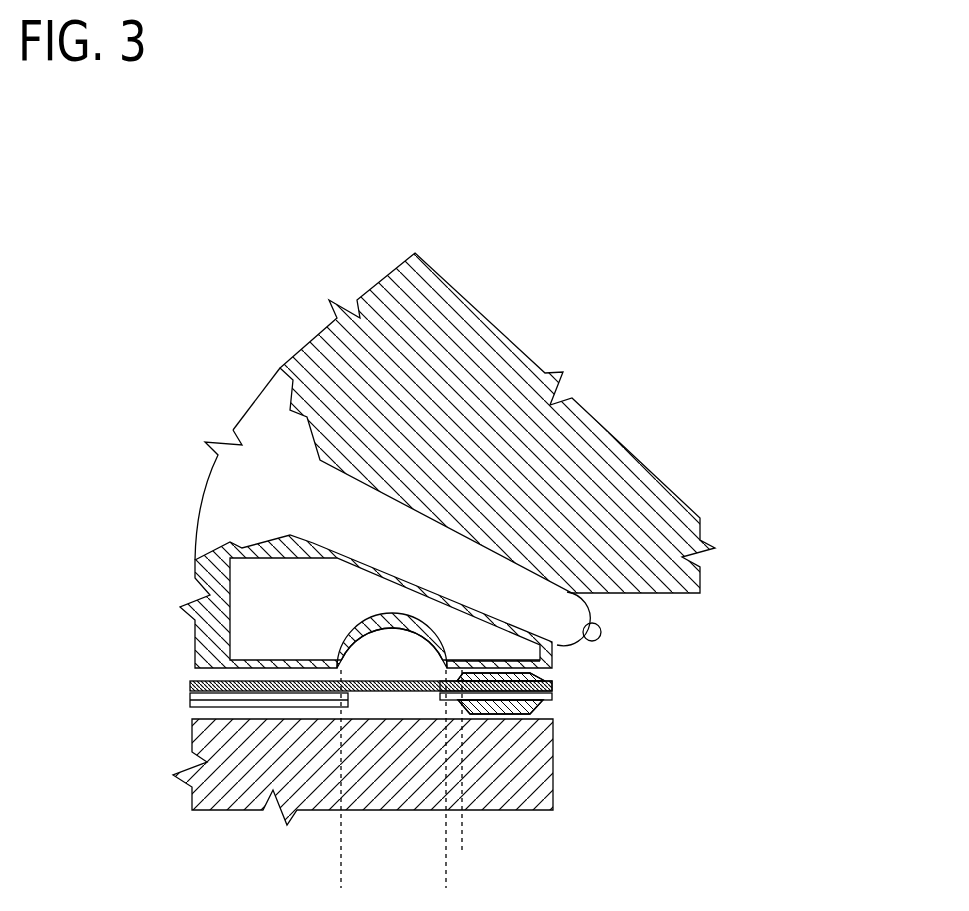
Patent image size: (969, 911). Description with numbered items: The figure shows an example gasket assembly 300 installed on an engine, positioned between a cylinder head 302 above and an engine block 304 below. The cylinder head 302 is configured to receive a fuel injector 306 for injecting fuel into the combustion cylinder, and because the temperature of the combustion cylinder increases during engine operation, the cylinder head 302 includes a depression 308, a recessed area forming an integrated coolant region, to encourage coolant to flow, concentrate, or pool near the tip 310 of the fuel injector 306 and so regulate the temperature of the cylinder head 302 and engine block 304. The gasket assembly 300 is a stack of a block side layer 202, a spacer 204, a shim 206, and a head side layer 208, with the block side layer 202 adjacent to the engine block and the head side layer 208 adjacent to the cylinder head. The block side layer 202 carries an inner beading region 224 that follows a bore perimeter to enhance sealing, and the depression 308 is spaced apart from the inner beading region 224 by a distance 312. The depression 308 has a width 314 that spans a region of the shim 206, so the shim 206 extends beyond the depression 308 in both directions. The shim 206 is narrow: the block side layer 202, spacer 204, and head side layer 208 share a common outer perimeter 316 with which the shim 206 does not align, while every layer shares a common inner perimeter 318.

The gasket assembly 300 is at (745, 695).
The cylinder head 302 is at (168, 242).
The engine block 304 is at (150, 721).
The fuel injector 306 is at (428, 557).
The depression 308 is at (392, 635).
The tip 310 is at (606, 624).
The distance 312 is at (413, 833).
The width 314 is at (446, 883).
The common outer perimeter 316 is at (185, 692).
The common inner perimeter 318 is at (568, 708).
The inner beading region 224 is at (548, 668).
The head side layer 208 is at (565, 697).
The shim 206 is at (573, 707).
The spacer 204 is at (573, 727).
The block side layer 202 is at (582, 745).